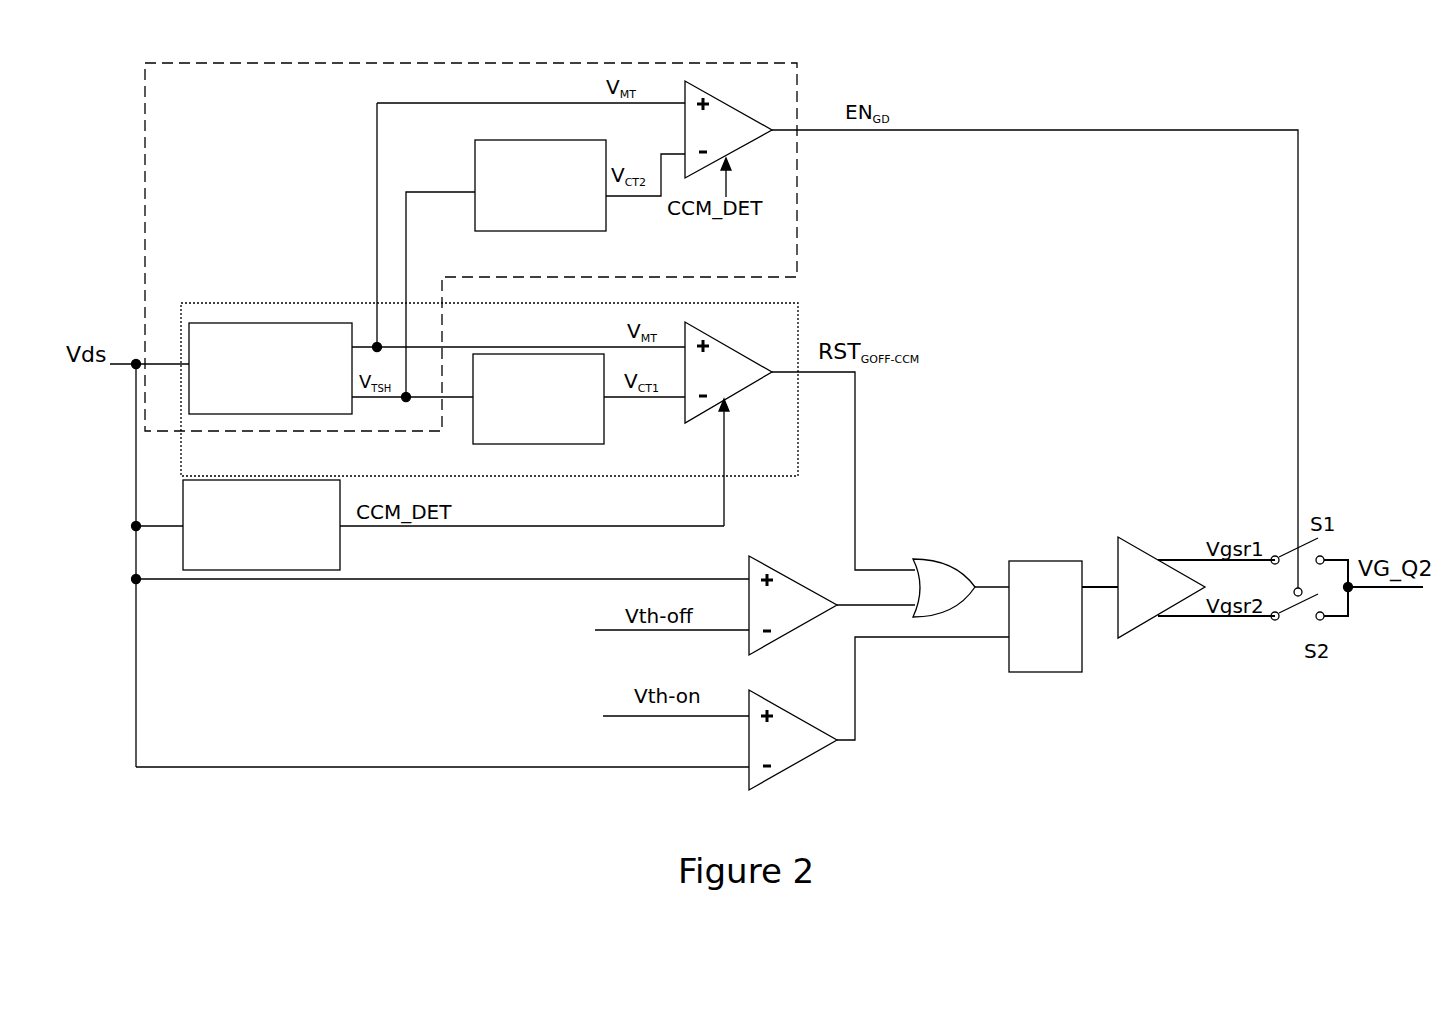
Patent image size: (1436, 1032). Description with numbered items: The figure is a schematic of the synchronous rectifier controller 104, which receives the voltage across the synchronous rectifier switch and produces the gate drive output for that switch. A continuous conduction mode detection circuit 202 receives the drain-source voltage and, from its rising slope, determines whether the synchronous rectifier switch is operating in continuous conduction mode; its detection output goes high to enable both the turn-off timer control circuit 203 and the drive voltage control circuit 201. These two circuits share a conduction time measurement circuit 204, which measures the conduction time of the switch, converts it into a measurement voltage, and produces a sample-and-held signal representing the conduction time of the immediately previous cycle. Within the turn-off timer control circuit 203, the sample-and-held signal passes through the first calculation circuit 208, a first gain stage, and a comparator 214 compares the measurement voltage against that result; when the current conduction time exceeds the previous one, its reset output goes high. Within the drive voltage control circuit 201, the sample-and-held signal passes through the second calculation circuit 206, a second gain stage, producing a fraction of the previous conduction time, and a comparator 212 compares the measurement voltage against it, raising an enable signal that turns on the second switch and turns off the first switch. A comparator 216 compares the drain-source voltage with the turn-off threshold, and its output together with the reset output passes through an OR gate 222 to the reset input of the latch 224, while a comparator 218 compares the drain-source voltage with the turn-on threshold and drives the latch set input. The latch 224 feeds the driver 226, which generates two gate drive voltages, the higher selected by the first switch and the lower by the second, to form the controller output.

The synchronous rectifier controller 104 is at (1333, 124).
The drive voltage control circuit 201 is at (471, 247).
The continuous conduction mode detection circuit 202 is at (271, 572).
The turn-off timer control circuit 203 is at (489, 389).
The conduction time measurement circuit 204 is at (287, 323).
The second calculation circuit 206 is at (476, 163).
The first calculation circuit 208 is at (528, 354).
The comparator 212 is at (728, 129).
The comparator 214 is at (728, 372).
The comparator 216 is at (793, 605).
The comparator 218 is at (793, 740).
The OR gate 222 is at (944, 588).
The latch 224 is at (1042, 561).
The driver 226 is at (1127, 550).